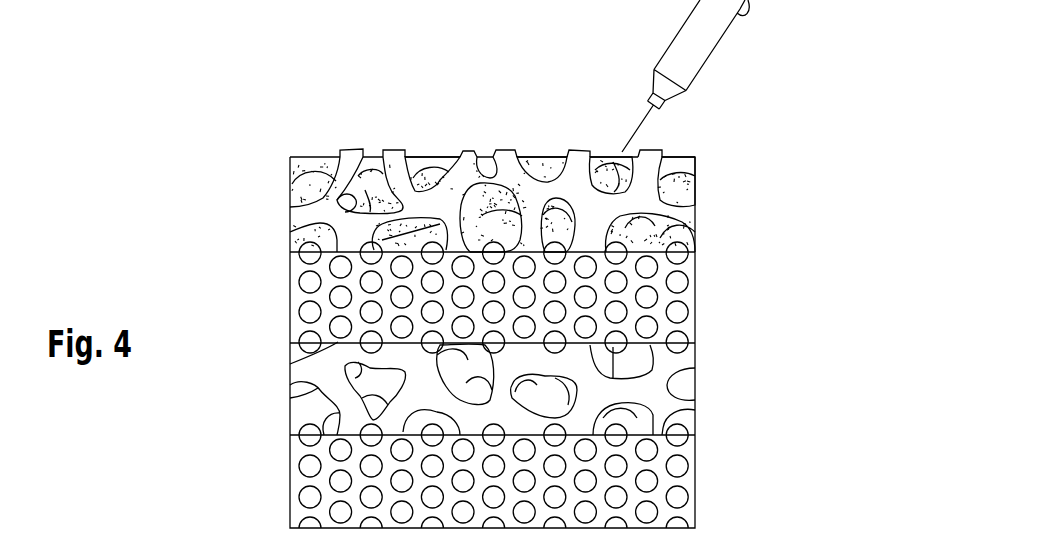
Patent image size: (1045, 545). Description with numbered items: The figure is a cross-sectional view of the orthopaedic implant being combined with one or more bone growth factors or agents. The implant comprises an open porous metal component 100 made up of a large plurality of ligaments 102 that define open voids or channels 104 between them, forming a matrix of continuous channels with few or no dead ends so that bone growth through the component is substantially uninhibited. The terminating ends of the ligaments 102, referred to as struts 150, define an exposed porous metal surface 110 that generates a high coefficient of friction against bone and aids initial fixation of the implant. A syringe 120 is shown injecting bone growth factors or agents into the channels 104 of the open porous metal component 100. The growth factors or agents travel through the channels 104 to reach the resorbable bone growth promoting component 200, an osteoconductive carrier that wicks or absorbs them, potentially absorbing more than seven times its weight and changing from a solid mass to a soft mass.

The exposed porous metal surface 110 is at (268, 158).
The open porous metal component 100 is at (268, 197).
The resorbable bone growth promoting component 200 is at (268, 296).
The struts 150 is at (353, 160).
The ligaments 102 is at (562, 183).
The channels 104 is at (687, 182).
The syringe 120 is at (700, 48).